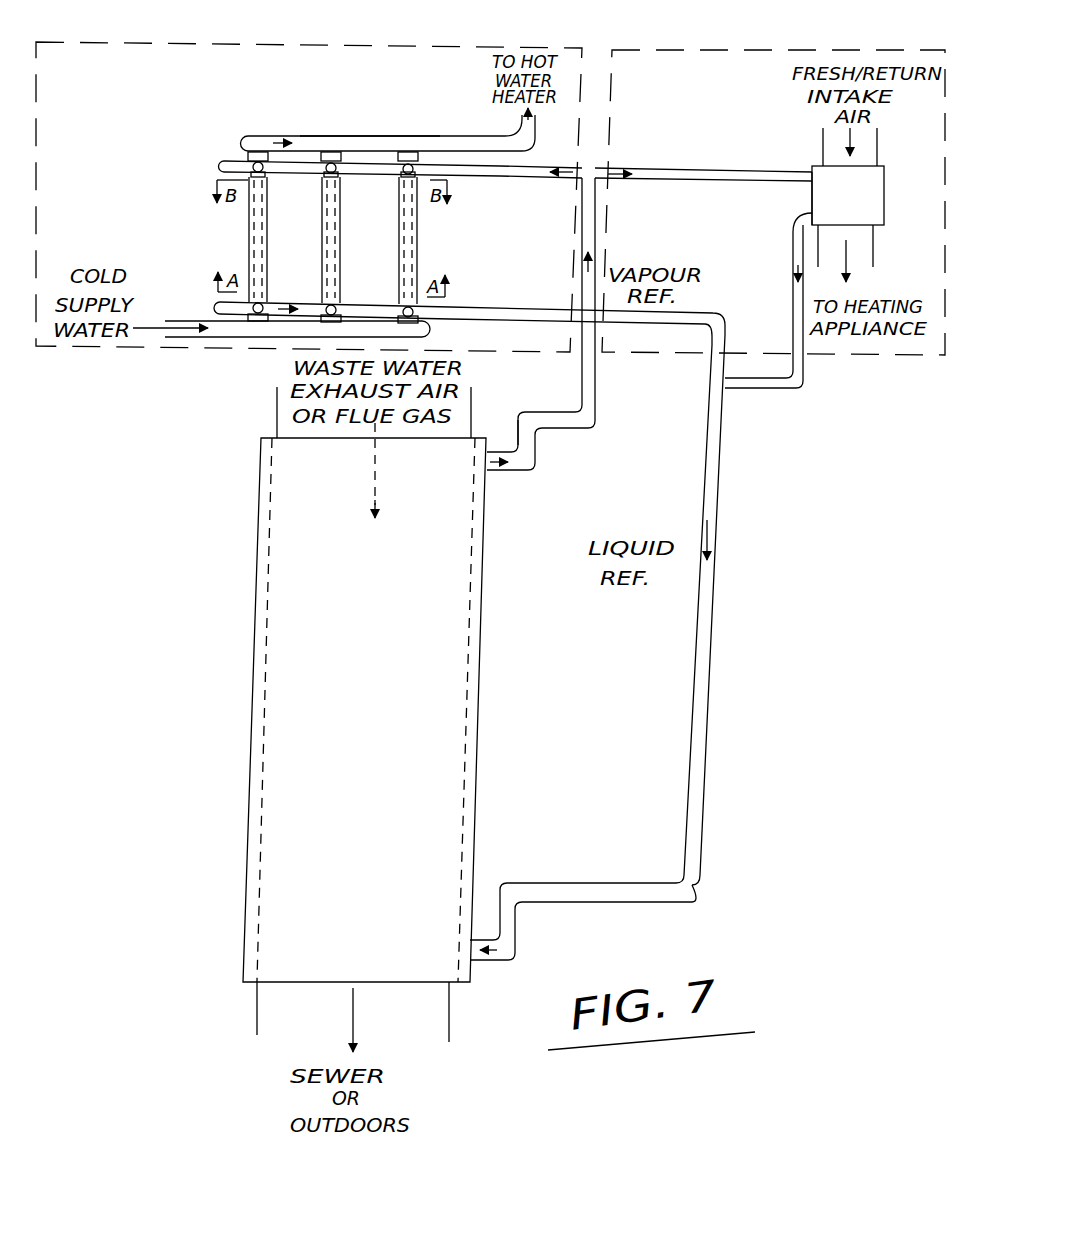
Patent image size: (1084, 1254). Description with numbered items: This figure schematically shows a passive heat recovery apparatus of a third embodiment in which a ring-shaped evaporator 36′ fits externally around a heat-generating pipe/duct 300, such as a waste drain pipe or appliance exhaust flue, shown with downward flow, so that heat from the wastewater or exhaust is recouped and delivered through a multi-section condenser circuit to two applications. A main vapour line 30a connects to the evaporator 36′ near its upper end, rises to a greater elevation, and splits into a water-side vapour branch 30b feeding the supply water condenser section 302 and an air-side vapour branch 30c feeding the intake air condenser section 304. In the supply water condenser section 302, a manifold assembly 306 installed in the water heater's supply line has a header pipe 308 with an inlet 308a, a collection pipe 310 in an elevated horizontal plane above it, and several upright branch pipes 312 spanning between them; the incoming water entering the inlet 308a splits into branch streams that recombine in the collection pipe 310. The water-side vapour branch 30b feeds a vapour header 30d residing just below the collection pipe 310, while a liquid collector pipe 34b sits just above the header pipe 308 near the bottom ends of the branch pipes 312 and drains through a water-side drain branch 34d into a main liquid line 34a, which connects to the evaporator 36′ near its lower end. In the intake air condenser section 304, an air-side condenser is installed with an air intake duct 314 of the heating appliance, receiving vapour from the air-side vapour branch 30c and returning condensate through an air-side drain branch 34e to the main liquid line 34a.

The supply water condenser section 302 is at (182, 109).
The intake air condenser section 304 is at (727, 124).
The manifold assembly 306 is at (278, 124).
The collection pipe 310 is at (357, 140).
The vapour header 30d is at (222, 162).
The water-side vapour branch 30b is at (527, 176).
The air-side vapour branch 30c is at (678, 178).
The main vapour line 30a is at (592, 397).
The liquid collector pipe 34b is at (362, 300).
The water-side drain branch 34d is at (505, 312).
The main liquid line 34a is at (568, 892).
The air-side drain branch 34e is at (792, 300).
The air intake duct 314 is at (870, 252).
The branch pipe 312 is at (262, 230).
The header pipe 308 is at (258, 333).
The inlet 308a is at (163, 321).
The ring-shaped evaporator 36′ is at (290, 684).
The heat-generating pipe/duct 300 is at (270, 994).